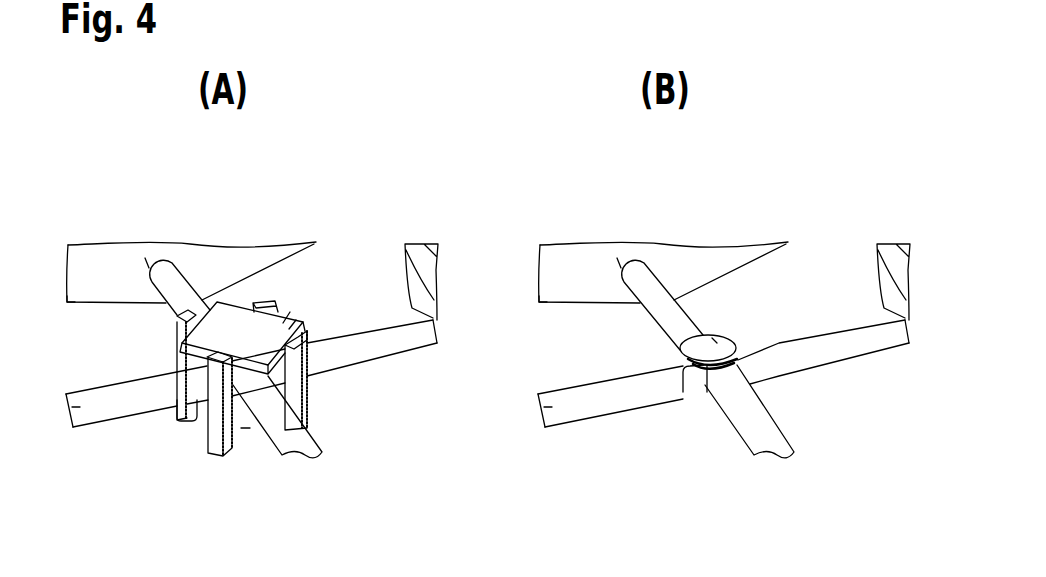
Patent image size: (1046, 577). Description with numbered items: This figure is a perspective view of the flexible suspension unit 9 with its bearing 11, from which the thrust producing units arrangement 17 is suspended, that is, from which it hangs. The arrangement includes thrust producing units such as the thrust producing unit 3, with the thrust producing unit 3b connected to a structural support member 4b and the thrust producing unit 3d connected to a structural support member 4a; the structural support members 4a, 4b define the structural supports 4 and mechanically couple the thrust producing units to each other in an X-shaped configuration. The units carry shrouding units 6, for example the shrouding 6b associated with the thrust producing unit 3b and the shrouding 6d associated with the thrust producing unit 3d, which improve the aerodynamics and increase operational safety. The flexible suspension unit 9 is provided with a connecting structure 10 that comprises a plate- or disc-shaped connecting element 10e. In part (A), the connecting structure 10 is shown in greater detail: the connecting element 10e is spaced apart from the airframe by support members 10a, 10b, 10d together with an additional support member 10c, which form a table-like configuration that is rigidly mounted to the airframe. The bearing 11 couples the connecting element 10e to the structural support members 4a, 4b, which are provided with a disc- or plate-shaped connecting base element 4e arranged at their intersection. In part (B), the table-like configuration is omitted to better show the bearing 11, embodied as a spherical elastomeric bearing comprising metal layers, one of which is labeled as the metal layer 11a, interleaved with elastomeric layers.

The thrust producing unit 3 is at (247, 240).
The thrust producing unit 3b is at (87, 247).
The thrust producing unit 3d is at (408, 238).
The structural supports 4 is at (303, 461).
The structural support member 4a is at (78, 407).
The structural support member 4b is at (189, 296).
The connecting base element 4e is at (695, 377).
The shrouding units 6 is at (80, 308).
The shrouding 6b is at (147, 264).
The shrouding 6d is at (424, 254).
The flexible suspension unit 9 is at (245, 437).
The connecting structure 10 is at (291, 303).
The support member 10a is at (213, 438).
The support member 10b is at (187, 420).
The support member 10c is at (293, 397).
The support member 10d is at (272, 300).
The connecting element 10e is at (287, 317).
The bearing 11 is at (746, 343).
The metal layer 11a is at (717, 343).
The thrust producing units arrangement 17 is at (290, 238).